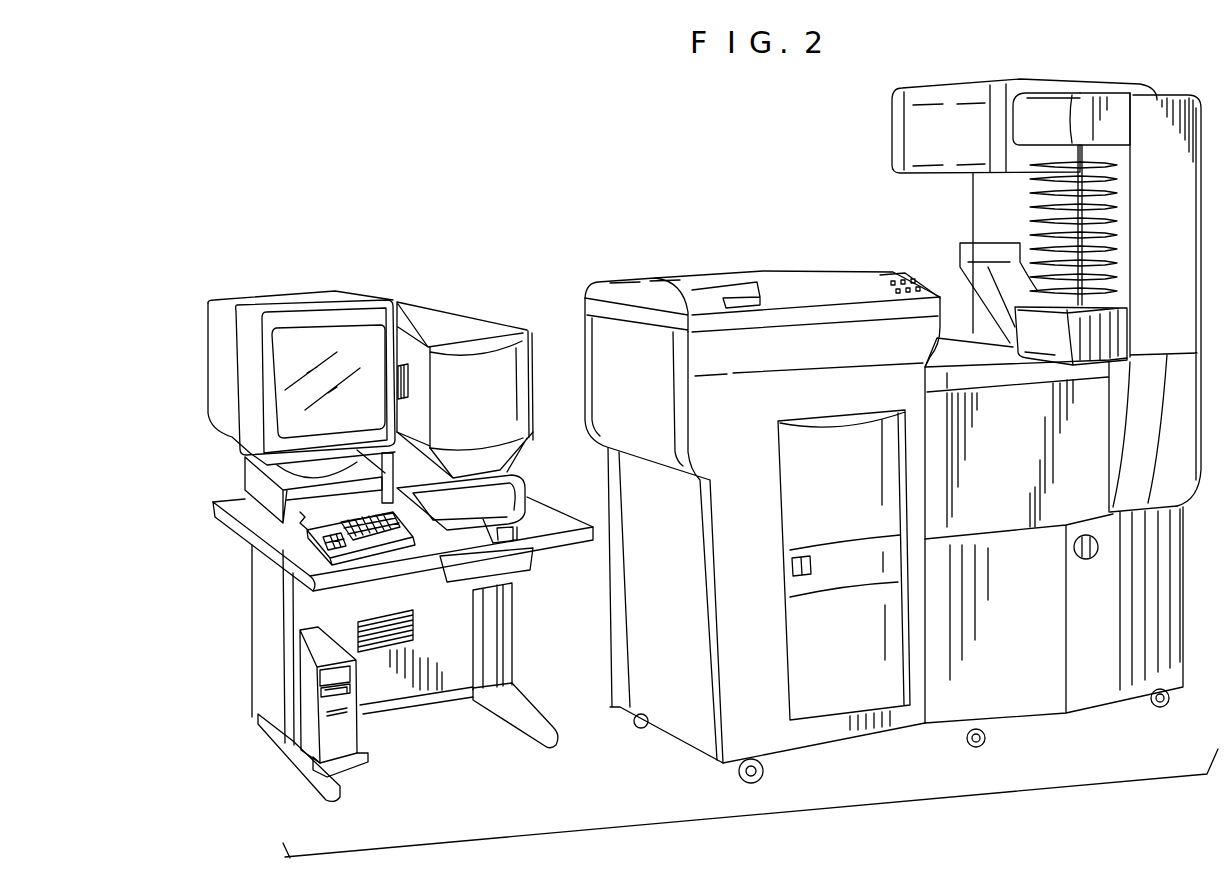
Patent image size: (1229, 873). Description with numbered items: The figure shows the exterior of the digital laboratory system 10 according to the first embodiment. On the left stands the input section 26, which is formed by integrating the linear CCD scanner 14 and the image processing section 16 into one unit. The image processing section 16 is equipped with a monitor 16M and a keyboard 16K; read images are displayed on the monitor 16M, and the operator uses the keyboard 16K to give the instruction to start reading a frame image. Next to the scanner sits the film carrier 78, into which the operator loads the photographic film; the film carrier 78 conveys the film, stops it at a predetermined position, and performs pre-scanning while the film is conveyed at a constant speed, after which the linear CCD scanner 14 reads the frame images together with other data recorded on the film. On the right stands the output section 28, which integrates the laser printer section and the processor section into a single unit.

The digital laboratory system 10 is at (482, 149).
The input section 26 is at (280, 259).
The monitor 16M is at (250, 343).
The keyboard 16K is at (308, 533).
The image processing section 16 is at (373, 733).
The linear CCD scanner 14 is at (507, 302).
The film carrier 78 is at (513, 484).
The output section 28 is at (716, 196).